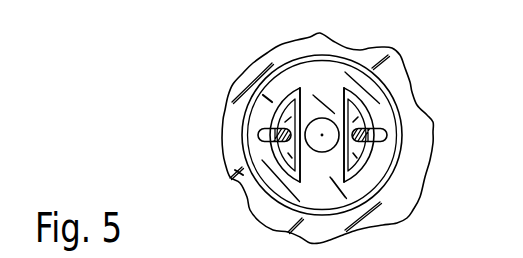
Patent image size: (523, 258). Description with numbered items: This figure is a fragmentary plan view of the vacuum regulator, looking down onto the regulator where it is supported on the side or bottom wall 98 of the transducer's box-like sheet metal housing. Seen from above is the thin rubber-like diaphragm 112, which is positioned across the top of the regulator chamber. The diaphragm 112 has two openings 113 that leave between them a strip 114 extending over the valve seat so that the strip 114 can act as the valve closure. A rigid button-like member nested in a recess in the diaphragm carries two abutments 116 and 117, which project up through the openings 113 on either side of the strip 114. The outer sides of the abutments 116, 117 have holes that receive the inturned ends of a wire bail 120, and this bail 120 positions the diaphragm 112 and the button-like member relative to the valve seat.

The side or bottom wall 98 is at (362, 57).
The diaphragm 112 is at (365, 183).
The openings 113 is at (343, 100).
The strip 114 is at (322, 152).
The abutment 116 is at (292, 150).
The abutment 117 is at (356, 150).
The wire bail 120 is at (259, 130).